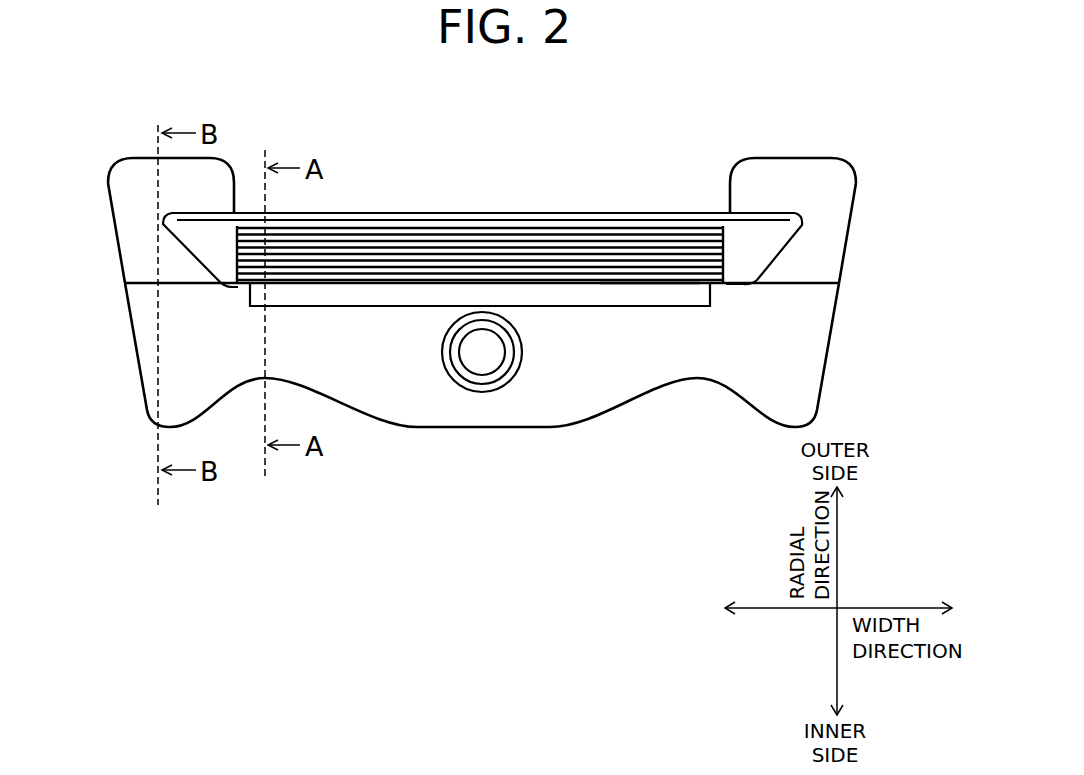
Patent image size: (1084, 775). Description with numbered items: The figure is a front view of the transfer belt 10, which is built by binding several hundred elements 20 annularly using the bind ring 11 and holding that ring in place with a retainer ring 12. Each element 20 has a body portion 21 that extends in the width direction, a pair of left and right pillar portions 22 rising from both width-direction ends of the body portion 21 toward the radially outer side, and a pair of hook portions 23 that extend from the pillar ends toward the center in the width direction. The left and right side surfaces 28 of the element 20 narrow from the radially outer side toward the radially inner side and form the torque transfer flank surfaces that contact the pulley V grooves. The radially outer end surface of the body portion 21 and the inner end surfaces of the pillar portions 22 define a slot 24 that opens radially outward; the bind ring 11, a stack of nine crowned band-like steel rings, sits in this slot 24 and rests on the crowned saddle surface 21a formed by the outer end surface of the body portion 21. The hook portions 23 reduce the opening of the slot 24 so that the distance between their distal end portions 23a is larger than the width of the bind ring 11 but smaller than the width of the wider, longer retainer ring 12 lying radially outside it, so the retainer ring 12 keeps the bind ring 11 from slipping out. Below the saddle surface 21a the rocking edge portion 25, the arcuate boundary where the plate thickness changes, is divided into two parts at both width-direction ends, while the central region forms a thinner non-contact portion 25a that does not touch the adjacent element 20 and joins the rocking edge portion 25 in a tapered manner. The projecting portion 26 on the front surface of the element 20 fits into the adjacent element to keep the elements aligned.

The transfer belt 10 is at (739, 106).
The bind ring 11 is at (521, 229).
The retainer ring 12 is at (448, 214).
The element 20 is at (643, 459).
The body portion 21 is at (565, 424).
The saddle surface 21a is at (635, 281).
The pillar portion 22 is at (127, 207).
The hook portion 23 is at (151, 159).
The distal end portion 23a is at (236, 178).
The slot 24 is at (409, 181).
The rocking edge portion 25 is at (148, 283).
The non-contact portion 25a is at (572, 296).
The projecting portion 26 is at (483, 380).
The side surface 28 is at (133, 318).